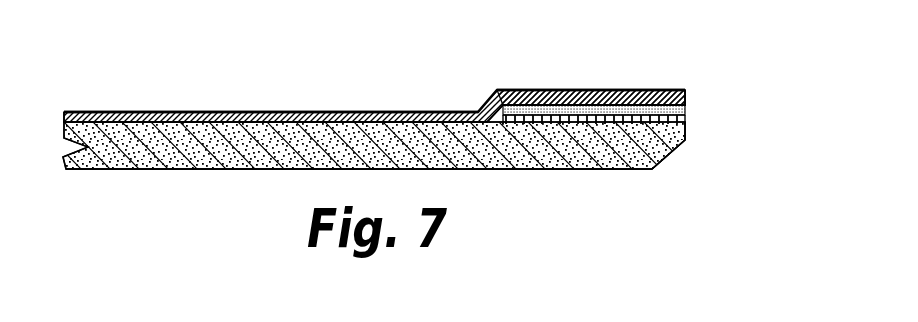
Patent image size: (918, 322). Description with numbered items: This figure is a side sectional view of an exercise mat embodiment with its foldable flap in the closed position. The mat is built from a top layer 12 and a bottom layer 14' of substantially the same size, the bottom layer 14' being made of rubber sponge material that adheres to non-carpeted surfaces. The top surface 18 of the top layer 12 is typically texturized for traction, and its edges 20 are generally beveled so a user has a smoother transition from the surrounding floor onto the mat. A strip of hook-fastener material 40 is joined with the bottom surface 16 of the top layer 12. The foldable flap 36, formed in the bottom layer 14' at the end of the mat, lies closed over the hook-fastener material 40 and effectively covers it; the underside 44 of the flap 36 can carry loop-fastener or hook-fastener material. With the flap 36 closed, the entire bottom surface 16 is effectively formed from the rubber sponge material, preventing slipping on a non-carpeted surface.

The top layer 12 is at (565, 169).
The bottom layer 14' is at (271, 60).
The bottom surface 16 is at (307, 111).
The top surface 18 is at (260, 170).
The edges 20 is at (670, 153).
The foldable flap 36 is at (588, 90).
The hook-fastener material 40 is at (687, 122).
The underside of foldable flap 44 is at (687, 108).